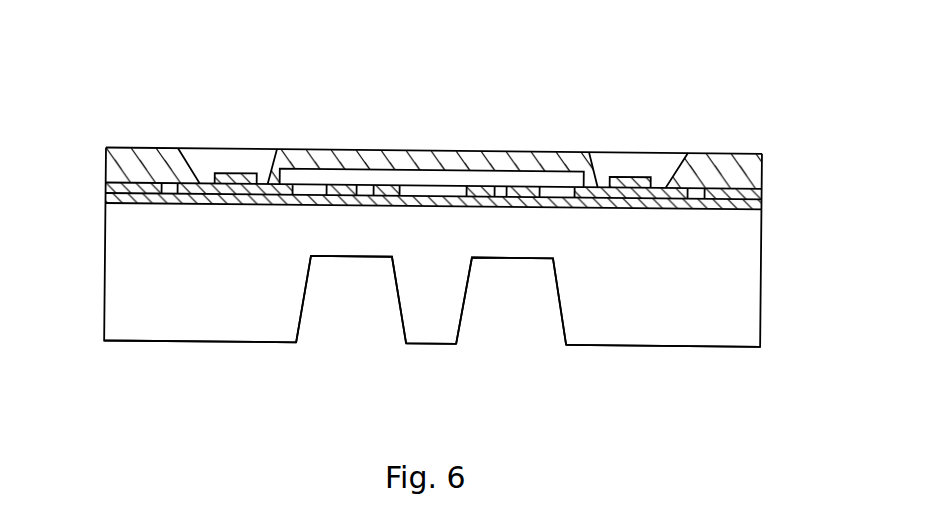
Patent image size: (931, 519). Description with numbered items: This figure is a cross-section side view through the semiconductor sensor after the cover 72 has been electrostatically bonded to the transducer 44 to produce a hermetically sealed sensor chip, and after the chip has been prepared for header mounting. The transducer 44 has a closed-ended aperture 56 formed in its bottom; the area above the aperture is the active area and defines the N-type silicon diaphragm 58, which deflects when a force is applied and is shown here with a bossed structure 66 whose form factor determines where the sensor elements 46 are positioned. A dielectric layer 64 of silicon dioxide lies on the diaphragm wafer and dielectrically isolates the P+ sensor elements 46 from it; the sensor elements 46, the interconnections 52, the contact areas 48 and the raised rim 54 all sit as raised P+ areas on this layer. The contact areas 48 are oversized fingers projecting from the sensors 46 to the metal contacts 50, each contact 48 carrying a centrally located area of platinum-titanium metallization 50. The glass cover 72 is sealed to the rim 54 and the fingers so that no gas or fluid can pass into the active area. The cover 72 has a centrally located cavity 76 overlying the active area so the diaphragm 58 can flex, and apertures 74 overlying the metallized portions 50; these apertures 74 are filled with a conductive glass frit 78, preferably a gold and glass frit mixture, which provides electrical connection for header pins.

The transducer 44 is at (762, 293).
The sensor elements 46 is at (390, 184).
The contact areas 48 is at (185, 180).
The metal contacts 50 is at (251, 173).
The interconnections 52 is at (451, 167).
The raised rim 54 is at (106, 187).
The closed-ended aperture 56 is at (542, 346).
The diaphragm 58 is at (370, 232).
The dielectric layer 64 is at (127, 200).
The bossed structure 66 is at (480, 328).
The cover 72 is at (762, 165).
The apertures 74 is at (178, 147).
The cavity 76 is at (552, 180).
The conductive glass frit 78 is at (242, 173).